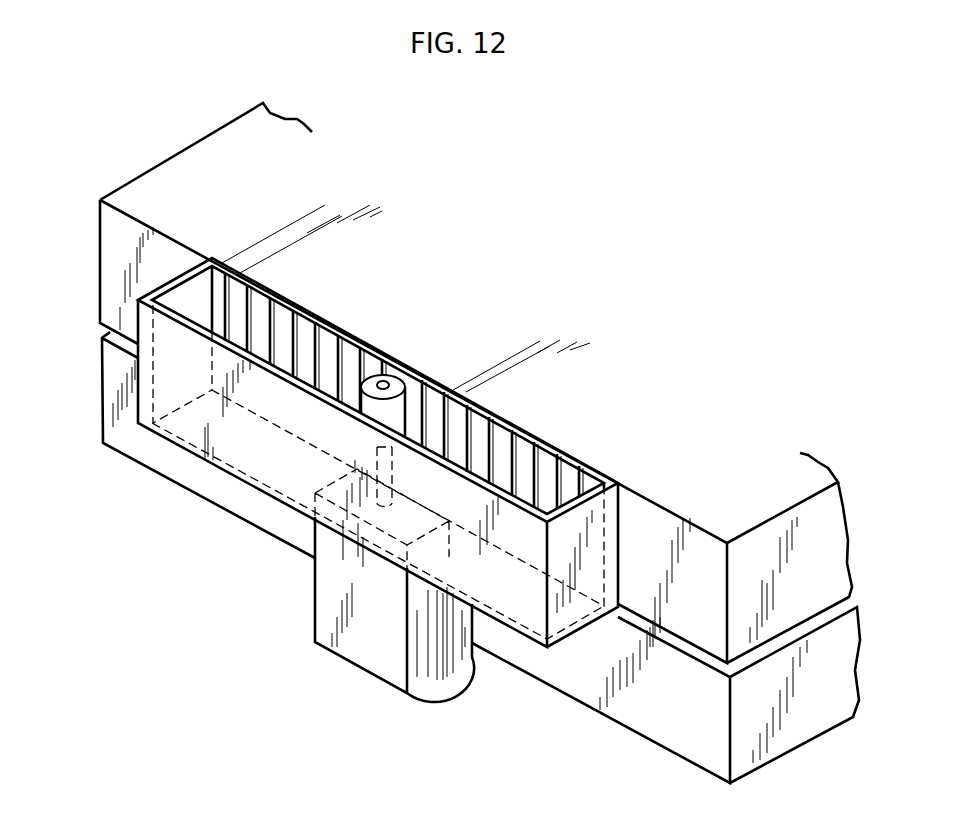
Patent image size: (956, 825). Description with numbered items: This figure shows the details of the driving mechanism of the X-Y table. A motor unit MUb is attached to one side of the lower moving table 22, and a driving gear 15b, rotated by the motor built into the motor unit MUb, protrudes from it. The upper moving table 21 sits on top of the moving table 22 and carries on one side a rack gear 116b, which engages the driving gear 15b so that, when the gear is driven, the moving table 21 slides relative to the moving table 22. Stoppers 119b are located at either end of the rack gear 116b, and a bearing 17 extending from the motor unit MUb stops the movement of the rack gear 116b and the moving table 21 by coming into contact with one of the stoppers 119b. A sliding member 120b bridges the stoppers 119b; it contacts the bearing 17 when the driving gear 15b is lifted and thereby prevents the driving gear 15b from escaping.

The moving table 21 is at (186, 162).
The moving table 22 is at (642, 723).
The stoppers 119b is at (425, 420).
The rack gear 116b is at (478, 428).
The driving gear 15b is at (391, 380).
The sliding member 120b is at (243, 447).
The bearing 17 is at (330, 550).
The motor unit MUb is at (294, 629).